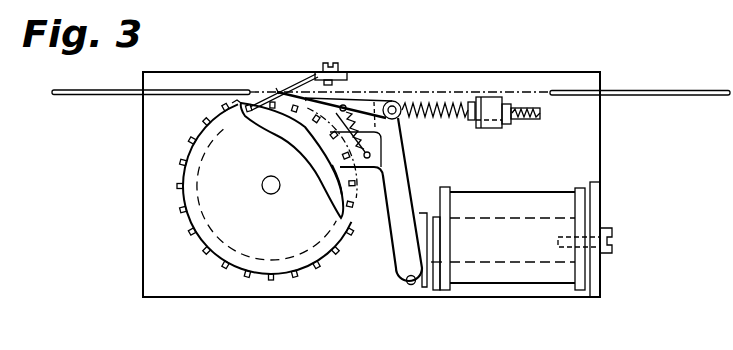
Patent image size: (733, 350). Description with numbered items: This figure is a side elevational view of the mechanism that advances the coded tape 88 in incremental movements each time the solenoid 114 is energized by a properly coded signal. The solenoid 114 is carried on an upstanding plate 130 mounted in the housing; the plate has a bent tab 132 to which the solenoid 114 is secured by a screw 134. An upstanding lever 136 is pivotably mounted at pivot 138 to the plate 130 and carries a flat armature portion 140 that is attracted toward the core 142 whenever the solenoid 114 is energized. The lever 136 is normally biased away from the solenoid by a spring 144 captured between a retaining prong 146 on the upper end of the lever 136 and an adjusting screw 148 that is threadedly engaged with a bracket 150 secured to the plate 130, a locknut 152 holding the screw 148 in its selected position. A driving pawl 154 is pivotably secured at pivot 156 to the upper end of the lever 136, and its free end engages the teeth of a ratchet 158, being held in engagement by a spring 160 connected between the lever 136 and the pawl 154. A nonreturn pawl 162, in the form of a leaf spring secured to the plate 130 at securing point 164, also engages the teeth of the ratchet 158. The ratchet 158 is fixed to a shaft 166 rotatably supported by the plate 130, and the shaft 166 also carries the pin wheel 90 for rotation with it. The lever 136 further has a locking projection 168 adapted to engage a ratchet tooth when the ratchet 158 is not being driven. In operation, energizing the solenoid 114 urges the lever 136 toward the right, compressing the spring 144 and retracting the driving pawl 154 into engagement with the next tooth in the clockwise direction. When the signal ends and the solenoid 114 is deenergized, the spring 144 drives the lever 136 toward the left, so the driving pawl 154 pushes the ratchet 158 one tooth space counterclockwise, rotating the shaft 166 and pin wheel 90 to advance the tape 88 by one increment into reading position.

The tape 88 is at (113, 98).
The pin wheel 90 is at (193, 140).
The solenoid 114 is at (513, 277).
The upstanding plate 130 is at (600, 139).
The bent tab 132 is at (602, 283).
The screw 134 is at (612, 230).
The upstanding lever 136 is at (400, 253).
The pivot 138 is at (412, 285).
The flat armature portion 140 is at (422, 228).
The core 142 is at (437, 292).
The spring 144 is at (447, 97).
The retaining prong 146 is at (417, 105).
The adjusting screw 148 is at (530, 120).
The bracket 150 is at (488, 128).
The locknut 152 is at (510, 102).
The driving pawl 154 is at (355, 105).
The pivot 156 is at (392, 101).
The ratchet 158 is at (293, 132).
The spring 160 is at (381, 133).
The nonreturn pawl 162 is at (284, 86).
The securing point 164 is at (325, 63).
The shaft 166 is at (264, 190).
The locking projection 168 is at (340, 168).